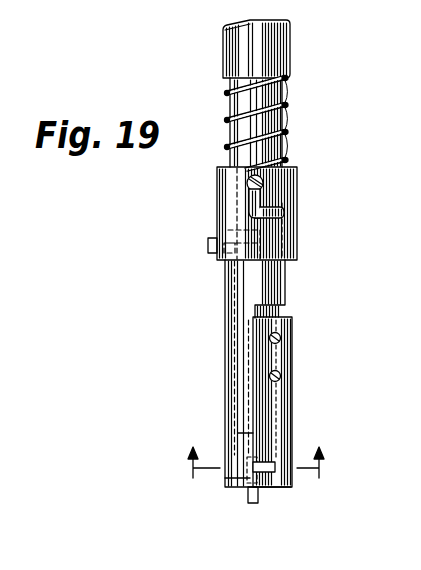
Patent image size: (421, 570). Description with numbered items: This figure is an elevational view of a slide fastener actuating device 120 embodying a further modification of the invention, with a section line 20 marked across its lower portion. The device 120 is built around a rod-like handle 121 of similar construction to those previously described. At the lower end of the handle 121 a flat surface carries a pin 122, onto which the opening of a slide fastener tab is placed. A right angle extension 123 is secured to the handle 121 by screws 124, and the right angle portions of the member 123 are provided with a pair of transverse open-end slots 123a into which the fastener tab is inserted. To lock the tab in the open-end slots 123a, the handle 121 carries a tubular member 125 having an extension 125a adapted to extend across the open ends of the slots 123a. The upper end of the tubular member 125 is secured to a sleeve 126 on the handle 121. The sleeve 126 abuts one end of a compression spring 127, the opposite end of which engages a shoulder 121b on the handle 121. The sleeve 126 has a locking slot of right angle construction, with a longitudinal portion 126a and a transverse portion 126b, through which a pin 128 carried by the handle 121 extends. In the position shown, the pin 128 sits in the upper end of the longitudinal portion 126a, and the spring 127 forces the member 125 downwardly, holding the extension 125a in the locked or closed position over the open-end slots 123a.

The slide fastener actuating device 120 is at (144, 233).
The rod-like handle 121 is at (284, 45).
The shoulder 121b is at (232, 79).
The pin 122 is at (250, 498).
The right angle extension 123 is at (287, 412).
The transverse open-end slots 123a is at (275, 488).
The screws 124 is at (281, 338).
The tubular member 125 is at (225, 290).
The extension 125a is at (224, 483).
The sleeve 126 is at (217, 192).
The longitudinal portion 126a is at (249, 212).
The transverse portion 126b is at (283, 214).
The compression spring 127 is at (284, 108).
The pin 128 is at (263, 184).
The section line 20- 20 is at (255, 450).